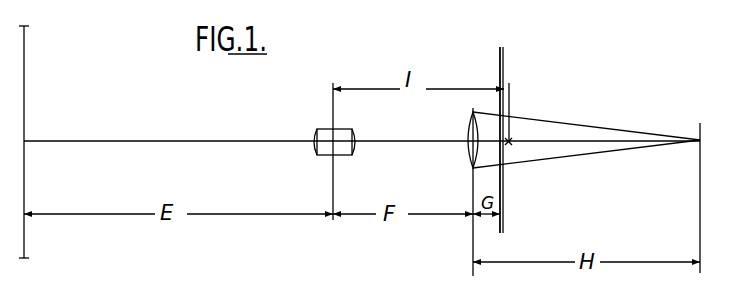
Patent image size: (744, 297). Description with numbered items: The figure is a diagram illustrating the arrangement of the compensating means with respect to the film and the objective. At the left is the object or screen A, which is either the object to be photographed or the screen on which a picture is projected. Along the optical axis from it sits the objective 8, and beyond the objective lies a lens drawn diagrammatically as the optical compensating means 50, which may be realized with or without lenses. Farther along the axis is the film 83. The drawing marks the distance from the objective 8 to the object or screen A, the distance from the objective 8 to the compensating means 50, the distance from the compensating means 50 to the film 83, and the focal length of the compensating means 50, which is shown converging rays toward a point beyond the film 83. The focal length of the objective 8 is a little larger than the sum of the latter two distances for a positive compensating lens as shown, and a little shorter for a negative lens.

The object or screen A is at (24, 84).
The objective 8 is at (318, 130).
The optical compensating means 50 is at (466, 123).
The film 83 is at (504, 60).